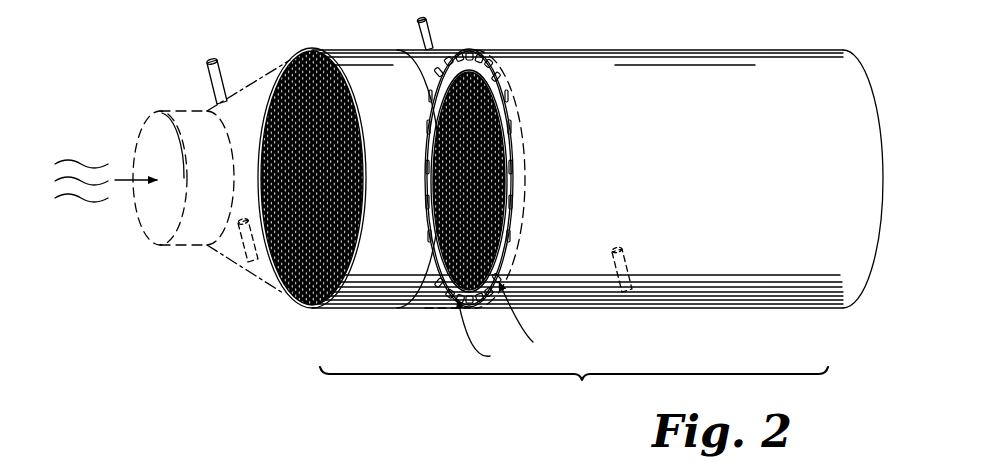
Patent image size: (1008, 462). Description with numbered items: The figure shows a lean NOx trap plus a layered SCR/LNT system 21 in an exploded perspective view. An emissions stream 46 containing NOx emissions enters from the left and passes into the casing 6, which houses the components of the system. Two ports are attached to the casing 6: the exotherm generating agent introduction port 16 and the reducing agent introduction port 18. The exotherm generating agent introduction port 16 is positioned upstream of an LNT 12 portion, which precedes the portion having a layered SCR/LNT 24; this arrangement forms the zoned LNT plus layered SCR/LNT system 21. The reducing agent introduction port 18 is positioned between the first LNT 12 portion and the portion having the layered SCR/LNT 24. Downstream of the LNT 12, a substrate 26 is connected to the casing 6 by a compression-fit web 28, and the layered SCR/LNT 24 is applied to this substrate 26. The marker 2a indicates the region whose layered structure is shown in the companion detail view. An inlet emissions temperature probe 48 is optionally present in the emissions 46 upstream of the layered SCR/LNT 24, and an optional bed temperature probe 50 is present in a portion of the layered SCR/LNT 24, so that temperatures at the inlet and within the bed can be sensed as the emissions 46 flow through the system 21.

The layered SCR/LNT detail view 2a is at (513, 145).
The casing 6 is at (180, 104).
The LNT portion 12 is at (372, 72).
The exotherm generating agent introduction port 16 is at (203, 62).
The reducing agent introduction port 18 is at (436, 13).
The zoned LNT plus layered SCR/LNT system 21 is at (574, 388).
The layered SCR/LNT 24 is at (617, 72).
The substrate 26 is at (487, 334).
The compression-fit web 28 is at (524, 325).
The emissions stream 46 is at (82, 154).
The inlet emissions temperature probe 48 is at (252, 272).
The bed temperature probe 50 is at (627, 300).